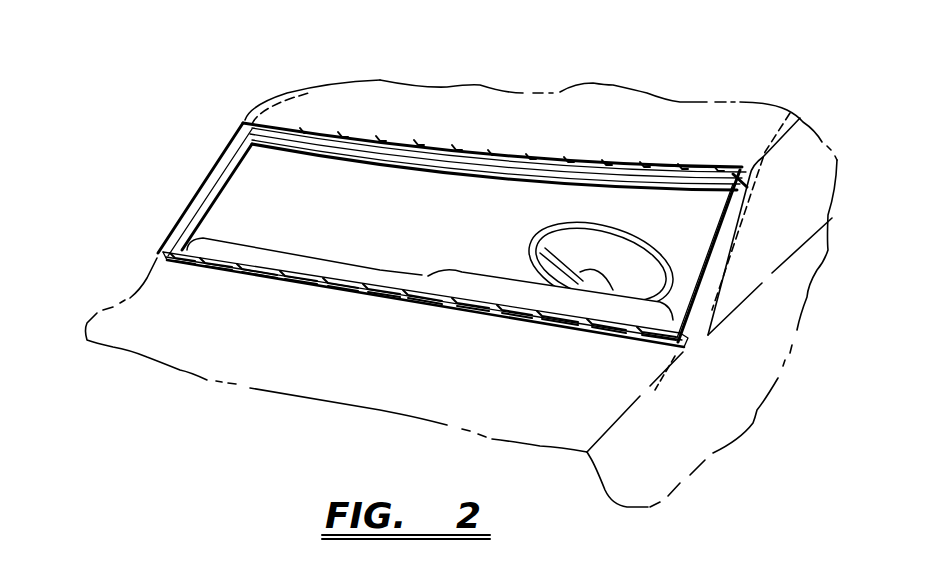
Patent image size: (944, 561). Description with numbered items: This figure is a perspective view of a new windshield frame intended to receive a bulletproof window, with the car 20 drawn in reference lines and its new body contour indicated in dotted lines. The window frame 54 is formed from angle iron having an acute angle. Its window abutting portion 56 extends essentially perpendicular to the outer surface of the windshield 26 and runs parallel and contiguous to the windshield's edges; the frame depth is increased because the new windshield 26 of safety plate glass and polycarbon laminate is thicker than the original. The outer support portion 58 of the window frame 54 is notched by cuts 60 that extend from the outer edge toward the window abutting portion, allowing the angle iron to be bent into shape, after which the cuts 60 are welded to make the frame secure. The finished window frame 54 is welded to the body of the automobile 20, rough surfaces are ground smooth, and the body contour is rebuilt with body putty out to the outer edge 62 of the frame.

The automobile 20 is at (556, 76).
The windshield 26 is at (448, 241).
The window frame 54 is at (227, 152).
The window abutting portion 56 is at (205, 193).
The outer support portion 58 is at (655, 166).
The cuts 60 is at (565, 161).
The outer edge 62 is at (438, 155).